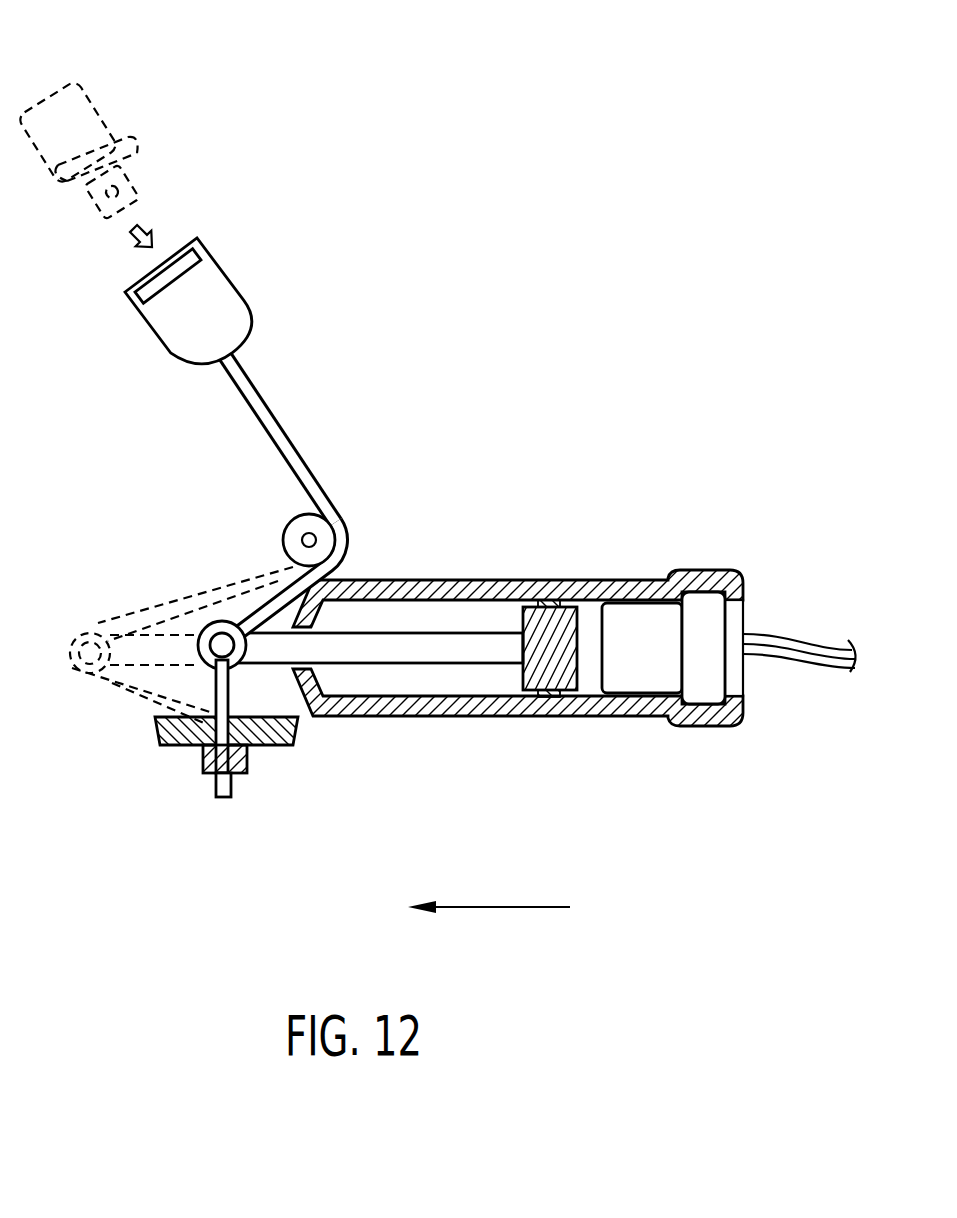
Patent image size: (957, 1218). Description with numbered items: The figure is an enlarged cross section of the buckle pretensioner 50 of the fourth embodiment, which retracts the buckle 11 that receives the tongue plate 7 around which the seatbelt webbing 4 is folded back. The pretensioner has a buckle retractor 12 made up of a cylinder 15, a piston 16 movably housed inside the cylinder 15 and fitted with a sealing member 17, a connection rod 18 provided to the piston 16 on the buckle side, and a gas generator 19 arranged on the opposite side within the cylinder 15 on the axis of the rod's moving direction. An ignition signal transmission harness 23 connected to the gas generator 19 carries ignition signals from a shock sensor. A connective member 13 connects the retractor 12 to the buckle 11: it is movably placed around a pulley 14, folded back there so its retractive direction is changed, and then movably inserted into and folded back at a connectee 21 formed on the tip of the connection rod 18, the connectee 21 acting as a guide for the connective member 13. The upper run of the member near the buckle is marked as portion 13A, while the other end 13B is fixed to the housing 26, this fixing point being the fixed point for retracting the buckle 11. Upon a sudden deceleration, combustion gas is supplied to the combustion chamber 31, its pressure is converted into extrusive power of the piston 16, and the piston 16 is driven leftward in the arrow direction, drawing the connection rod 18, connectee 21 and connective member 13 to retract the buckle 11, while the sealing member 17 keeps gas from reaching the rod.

The webbing 4 is at (72, 120).
The tongue plate 7 is at (120, 144).
The buckle 11 is at (213, 293).
The buckle retractor 12 is at (717, 440).
The connective member 13 is at (217, 506).
The upper arm portion 13A is at (243, 377).
The other end of the connective member 13B is at (221, 798).
The pulley 14 is at (297, 522).
The cylinder 15 is at (620, 706).
The piston 16 is at (562, 680).
The sealing member 17 is at (553, 600).
The connection rod 18 is at (392, 657).
The gas generator 19 is at (712, 608).
The connectee 21 is at (208, 625).
The ignition signal transmission harness 23 is at (796, 656).
The housing 26 is at (185, 732).
The combustion chamber 31 is at (590, 677).
The buckle pretensioner 50 is at (570, 356).